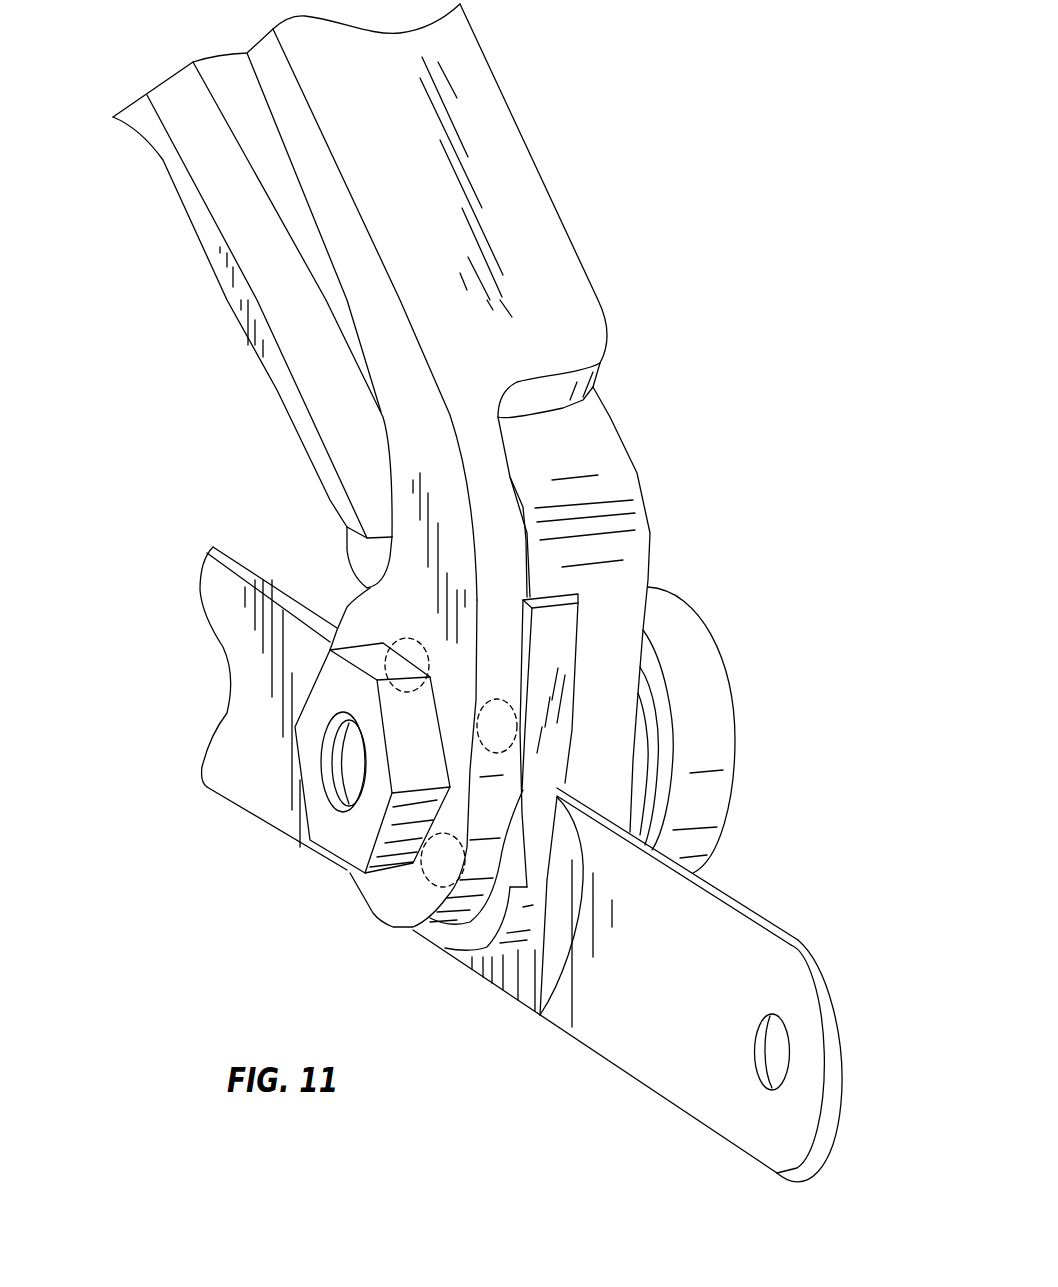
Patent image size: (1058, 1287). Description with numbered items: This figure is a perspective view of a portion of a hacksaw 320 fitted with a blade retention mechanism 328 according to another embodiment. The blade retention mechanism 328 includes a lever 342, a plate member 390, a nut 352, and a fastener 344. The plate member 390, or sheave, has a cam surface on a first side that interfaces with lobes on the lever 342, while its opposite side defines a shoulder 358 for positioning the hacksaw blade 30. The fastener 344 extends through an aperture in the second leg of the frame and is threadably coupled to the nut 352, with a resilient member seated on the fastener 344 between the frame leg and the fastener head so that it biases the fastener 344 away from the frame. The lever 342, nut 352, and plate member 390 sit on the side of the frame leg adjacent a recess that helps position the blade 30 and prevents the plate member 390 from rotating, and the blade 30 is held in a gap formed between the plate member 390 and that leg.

The hacksaw blade 30 is at (655, 1115).
The hacksaw 320 is at (155, 215).
The blade retention mechanism 328 is at (159, 434).
The lever 342 is at (503, 165).
The fastener 344 is at (702, 657).
The nut 352 is at (320, 708).
The shoulder 358 is at (541, 1015).
The plate member 390 is at (478, 937).